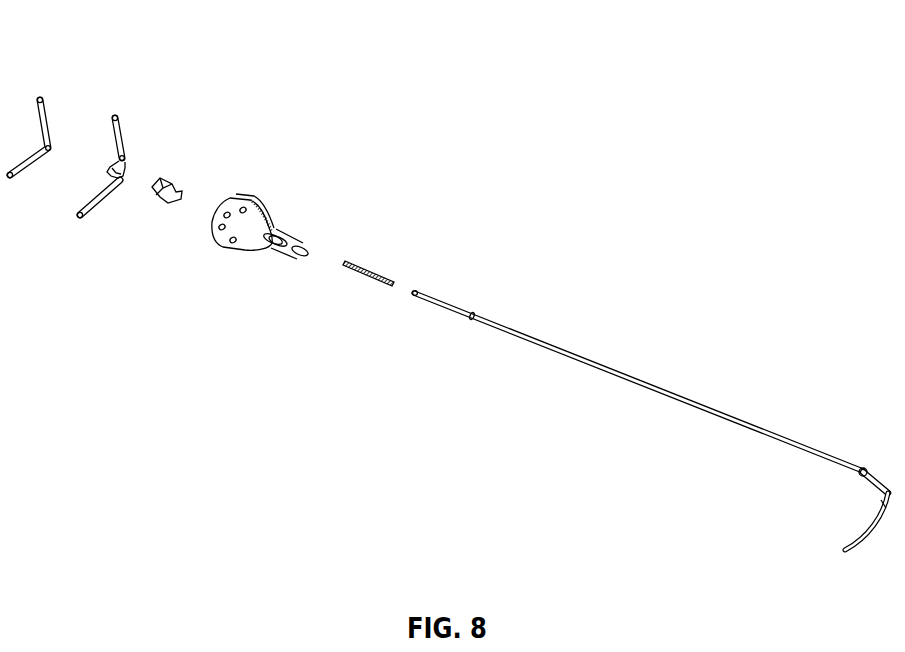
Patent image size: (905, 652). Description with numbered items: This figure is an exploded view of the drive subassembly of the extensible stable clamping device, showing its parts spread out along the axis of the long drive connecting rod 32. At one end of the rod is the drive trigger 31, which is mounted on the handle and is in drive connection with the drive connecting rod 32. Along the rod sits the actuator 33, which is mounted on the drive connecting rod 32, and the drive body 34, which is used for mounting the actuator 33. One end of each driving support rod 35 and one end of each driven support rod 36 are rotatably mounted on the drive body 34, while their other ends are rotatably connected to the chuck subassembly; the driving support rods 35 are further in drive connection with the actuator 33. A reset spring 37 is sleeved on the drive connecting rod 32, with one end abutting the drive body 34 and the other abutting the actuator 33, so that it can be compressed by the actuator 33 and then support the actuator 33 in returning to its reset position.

The drive trigger 31 is at (860, 517).
The drive connecting rod 32 is at (447, 302).
The actuator 33 is at (170, 182).
The drive body 34 is at (248, 227).
The driving support rod 35 is at (127, 133).
The driven support rod 36 is at (52, 112).
The reset spring 37 is at (373, 268).